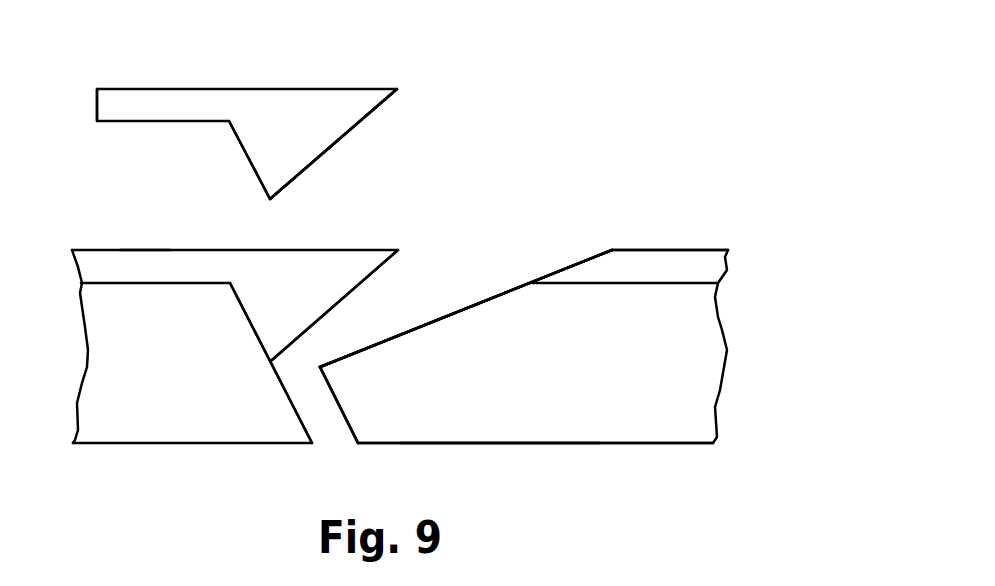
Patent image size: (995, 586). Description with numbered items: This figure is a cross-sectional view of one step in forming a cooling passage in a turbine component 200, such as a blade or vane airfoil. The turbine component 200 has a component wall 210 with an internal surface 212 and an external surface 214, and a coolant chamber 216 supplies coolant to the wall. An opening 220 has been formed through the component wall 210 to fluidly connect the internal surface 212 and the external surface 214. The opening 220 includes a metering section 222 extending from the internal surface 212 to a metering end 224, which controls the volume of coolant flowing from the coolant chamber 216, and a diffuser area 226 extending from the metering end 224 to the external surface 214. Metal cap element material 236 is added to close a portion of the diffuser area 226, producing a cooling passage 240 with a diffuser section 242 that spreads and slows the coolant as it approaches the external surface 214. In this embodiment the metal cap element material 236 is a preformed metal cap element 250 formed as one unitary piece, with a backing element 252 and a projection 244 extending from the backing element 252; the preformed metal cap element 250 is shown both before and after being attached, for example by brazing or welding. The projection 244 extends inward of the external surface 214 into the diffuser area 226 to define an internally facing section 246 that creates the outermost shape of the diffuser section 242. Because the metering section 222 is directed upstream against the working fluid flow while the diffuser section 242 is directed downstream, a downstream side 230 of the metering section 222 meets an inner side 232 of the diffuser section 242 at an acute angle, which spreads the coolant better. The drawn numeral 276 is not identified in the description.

The turbine component 200 is at (86, 212).
The component wall 210 is at (700, 365).
The internal surface 212 is at (597, 443).
The external surface 214 is at (688, 283).
The coolant chamber 216 is at (506, 492).
The opening 220 is at (512, 218).
The metering section 222 is at (325, 417).
The metering end 224 is at (313, 363).
The diffuser area 226 is at (478, 297).
The downstream side 230 is at (347, 420).
The inner side 232 is at (514, 288).
The metal cap element material 236 is at (348, 68).
The cooling passage 240 is at (398, 361).
The diffuser section 242 is at (427, 306).
The projection 244 is at (322, 133).
The internally facing section 246 is at (326, 153).
The preformed metal cap element 250 is at (229, 92).
The backing element 252 is at (140, 103).
The tip 276 is at (143, 230).